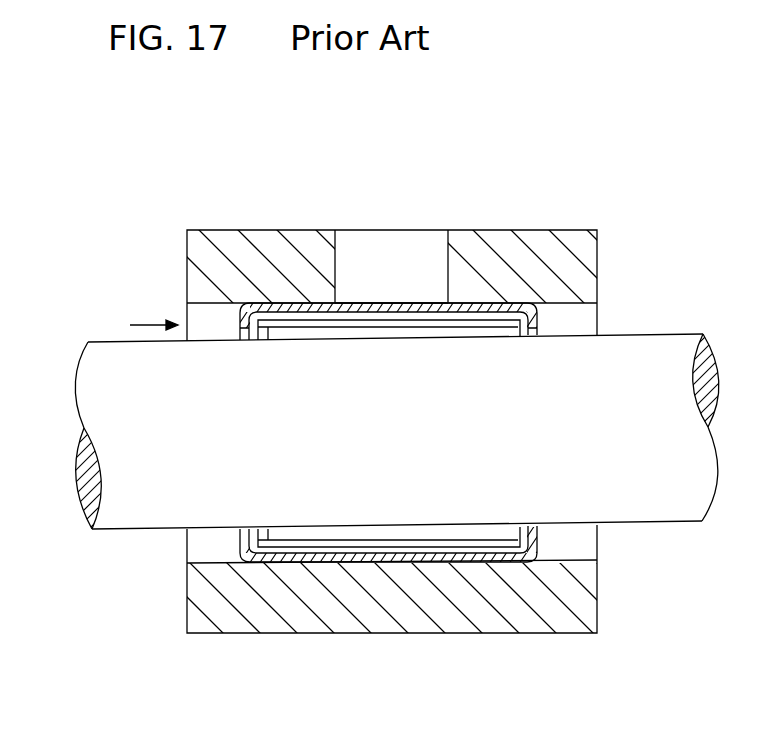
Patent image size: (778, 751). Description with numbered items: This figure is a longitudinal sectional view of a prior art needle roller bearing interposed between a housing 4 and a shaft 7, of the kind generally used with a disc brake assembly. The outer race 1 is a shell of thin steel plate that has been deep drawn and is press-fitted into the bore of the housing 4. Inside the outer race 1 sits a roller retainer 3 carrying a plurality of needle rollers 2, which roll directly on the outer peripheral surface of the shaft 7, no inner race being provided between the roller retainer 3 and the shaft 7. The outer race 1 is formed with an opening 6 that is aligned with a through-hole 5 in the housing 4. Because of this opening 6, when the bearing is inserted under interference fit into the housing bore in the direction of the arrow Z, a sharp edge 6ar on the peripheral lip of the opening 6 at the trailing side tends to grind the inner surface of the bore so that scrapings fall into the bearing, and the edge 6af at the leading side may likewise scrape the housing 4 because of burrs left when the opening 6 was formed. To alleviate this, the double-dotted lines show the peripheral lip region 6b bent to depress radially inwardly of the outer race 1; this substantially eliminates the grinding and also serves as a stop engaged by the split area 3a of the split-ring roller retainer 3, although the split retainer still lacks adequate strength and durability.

The outer race 1 is at (503, 303).
The needle rollers 2 is at (404, 543).
The roller retainer 3 is at (272, 543).
The split area 3a is at (303, 321).
The housing 4 is at (235, 246).
The through-hole 5 is at (352, 245).
The opening 6 is at (380, 303).
The sharp edge 6ar is at (318, 316).
The edge 6af is at (453, 303).
The peripheral lip region 6b is at (467, 318).
The shaft 7 is at (115, 355).
The direction of insertion Z is at (143, 324).